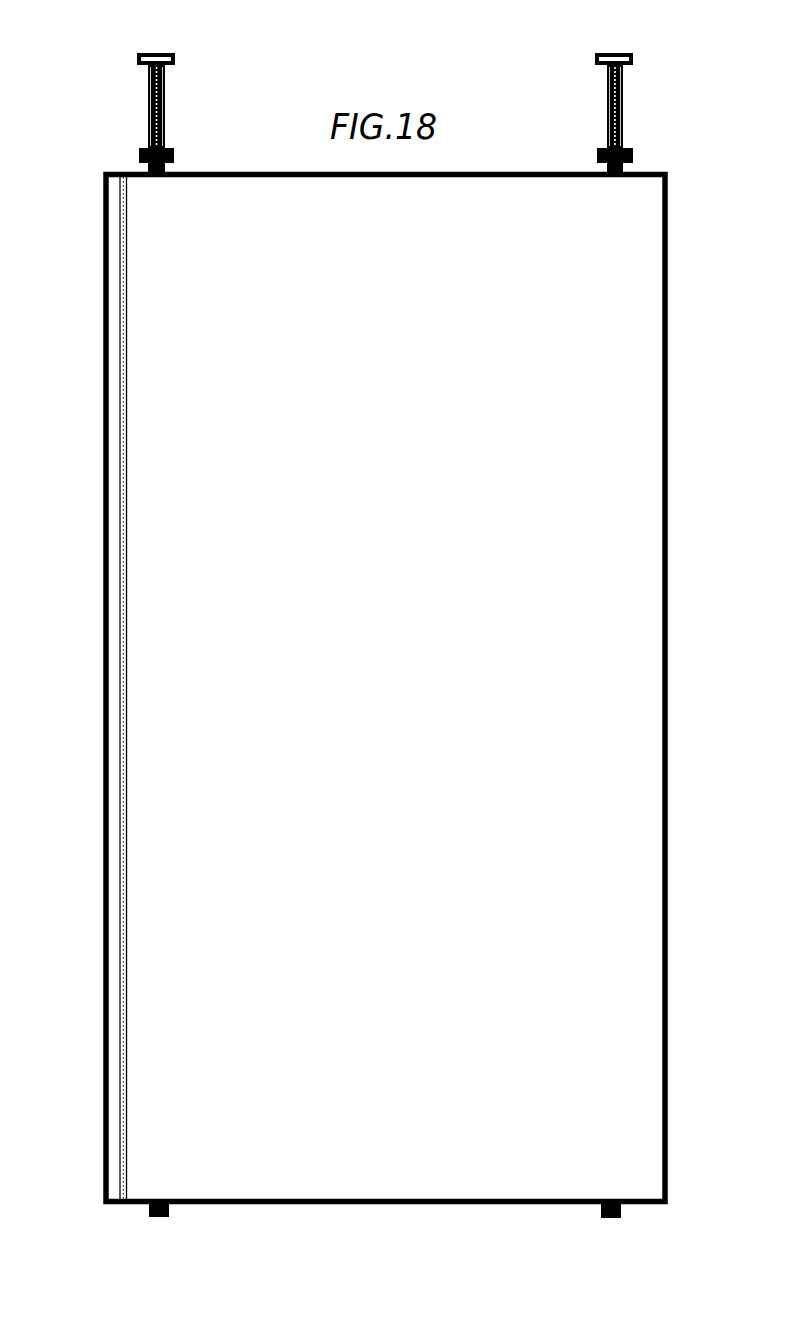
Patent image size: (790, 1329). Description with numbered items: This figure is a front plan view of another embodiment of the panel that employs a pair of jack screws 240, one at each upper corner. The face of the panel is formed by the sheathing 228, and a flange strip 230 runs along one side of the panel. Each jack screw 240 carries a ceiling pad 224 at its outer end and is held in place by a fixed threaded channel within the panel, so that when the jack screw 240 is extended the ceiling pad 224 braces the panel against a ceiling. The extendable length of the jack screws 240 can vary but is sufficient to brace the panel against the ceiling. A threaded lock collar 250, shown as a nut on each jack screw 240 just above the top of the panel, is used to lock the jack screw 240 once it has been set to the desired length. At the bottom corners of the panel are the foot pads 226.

The ceiling pad 224 is at (158, 53).
The foot pad 226 is at (166, 1217).
The sheathing 228 is at (425, 367).
The flange strip 230 is at (112, 418).
The jack screw 240 is at (165, 83).
The lock collar 250 is at (145, 148).